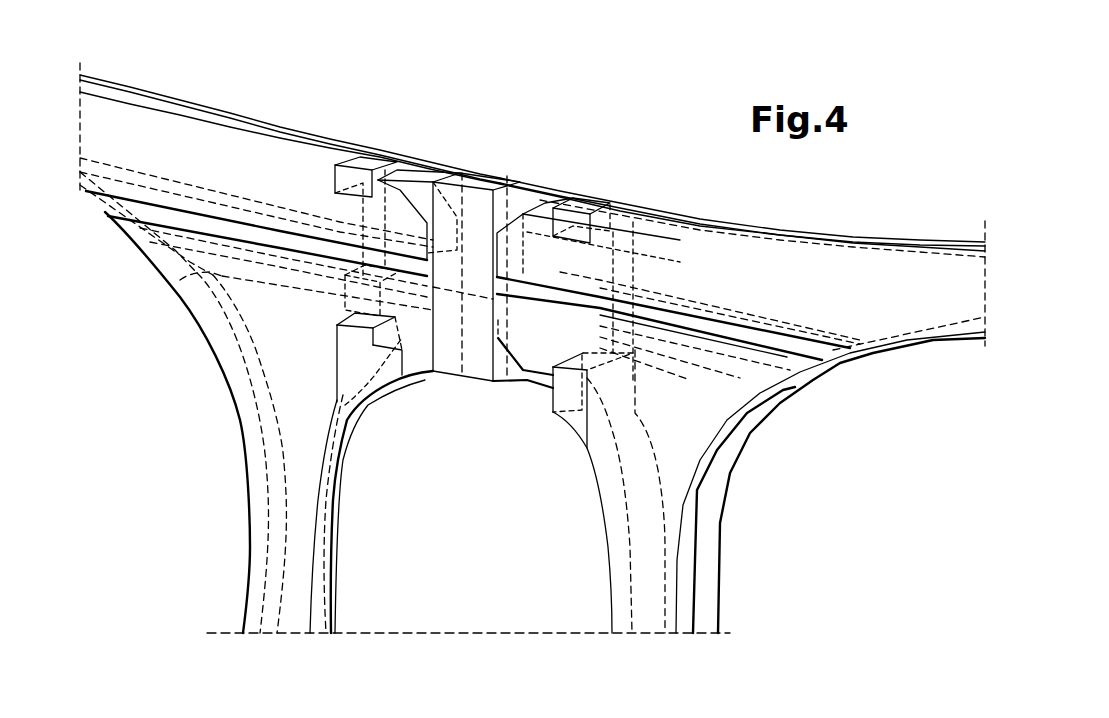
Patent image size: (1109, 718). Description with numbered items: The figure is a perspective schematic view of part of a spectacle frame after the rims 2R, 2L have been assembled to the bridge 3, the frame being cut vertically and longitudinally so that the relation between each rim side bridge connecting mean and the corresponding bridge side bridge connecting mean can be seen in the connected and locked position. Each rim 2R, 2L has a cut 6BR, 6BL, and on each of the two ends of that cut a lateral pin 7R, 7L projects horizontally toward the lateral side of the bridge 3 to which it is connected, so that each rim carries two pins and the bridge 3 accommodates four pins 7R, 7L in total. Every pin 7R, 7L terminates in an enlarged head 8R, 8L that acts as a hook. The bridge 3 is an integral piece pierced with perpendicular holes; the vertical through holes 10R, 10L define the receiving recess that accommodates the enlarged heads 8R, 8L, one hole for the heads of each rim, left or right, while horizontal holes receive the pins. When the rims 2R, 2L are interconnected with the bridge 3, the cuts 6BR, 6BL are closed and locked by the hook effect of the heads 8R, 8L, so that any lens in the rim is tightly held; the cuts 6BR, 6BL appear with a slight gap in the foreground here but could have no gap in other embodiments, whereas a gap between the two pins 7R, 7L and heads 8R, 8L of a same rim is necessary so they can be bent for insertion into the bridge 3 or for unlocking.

The rim 2R is at (140, 137).
The rim 2L is at (860, 273).
The bridge 3 is at (477, 203).
The cut 6BR is at (112, 207).
The cut 6BL is at (844, 355).
The lateral pin 7R is at (380, 197).
The lateral pin 7L is at (563, 258).
The enlarged head 8R is at (413, 177).
The enlarged head 8L is at (550, 215).
The through hole 10R is at (410, 171).
The through hole 10L is at (536, 197).